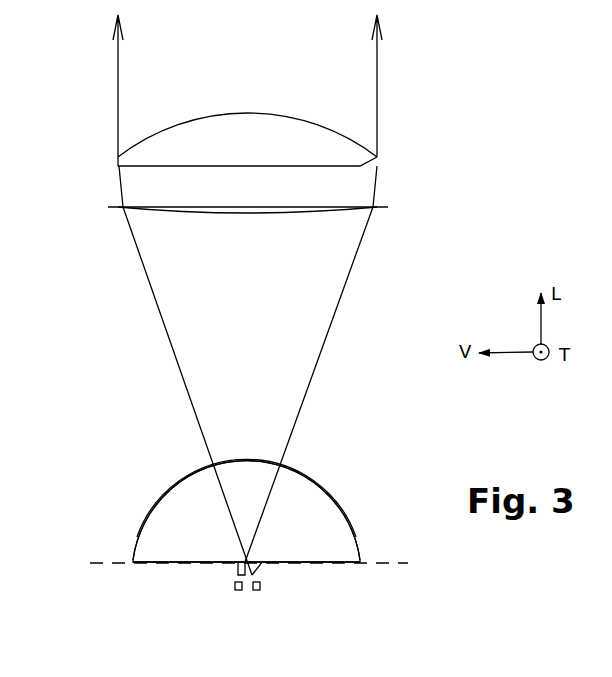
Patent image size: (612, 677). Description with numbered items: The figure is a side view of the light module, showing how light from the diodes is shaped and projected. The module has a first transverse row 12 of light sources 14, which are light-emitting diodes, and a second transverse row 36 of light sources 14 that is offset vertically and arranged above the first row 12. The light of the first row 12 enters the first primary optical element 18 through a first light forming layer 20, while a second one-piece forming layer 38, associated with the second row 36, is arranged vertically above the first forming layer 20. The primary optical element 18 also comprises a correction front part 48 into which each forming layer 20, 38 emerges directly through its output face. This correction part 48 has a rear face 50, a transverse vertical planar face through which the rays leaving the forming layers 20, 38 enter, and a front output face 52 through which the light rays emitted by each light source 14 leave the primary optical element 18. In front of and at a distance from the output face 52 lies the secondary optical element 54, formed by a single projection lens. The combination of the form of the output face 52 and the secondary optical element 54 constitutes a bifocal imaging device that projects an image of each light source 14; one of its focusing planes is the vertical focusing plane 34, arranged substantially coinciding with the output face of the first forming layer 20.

The first transverse row 12 is at (259, 606).
The light sources 14 is at (238, 591).
The first primary optical element 18 is at (370, 502).
The first light forming layer 20 is at (263, 565).
The second, vertical focusing plane 34 is at (97, 568).
The second transverse row 36 is at (237, 605).
The second one-piece forming layer 38 is at (237, 570).
The correction front part 48 is at (344, 480).
The rear face 50 is at (147, 564).
The front output face 52 is at (180, 456).
The secondary optical element 54 is at (401, 184).